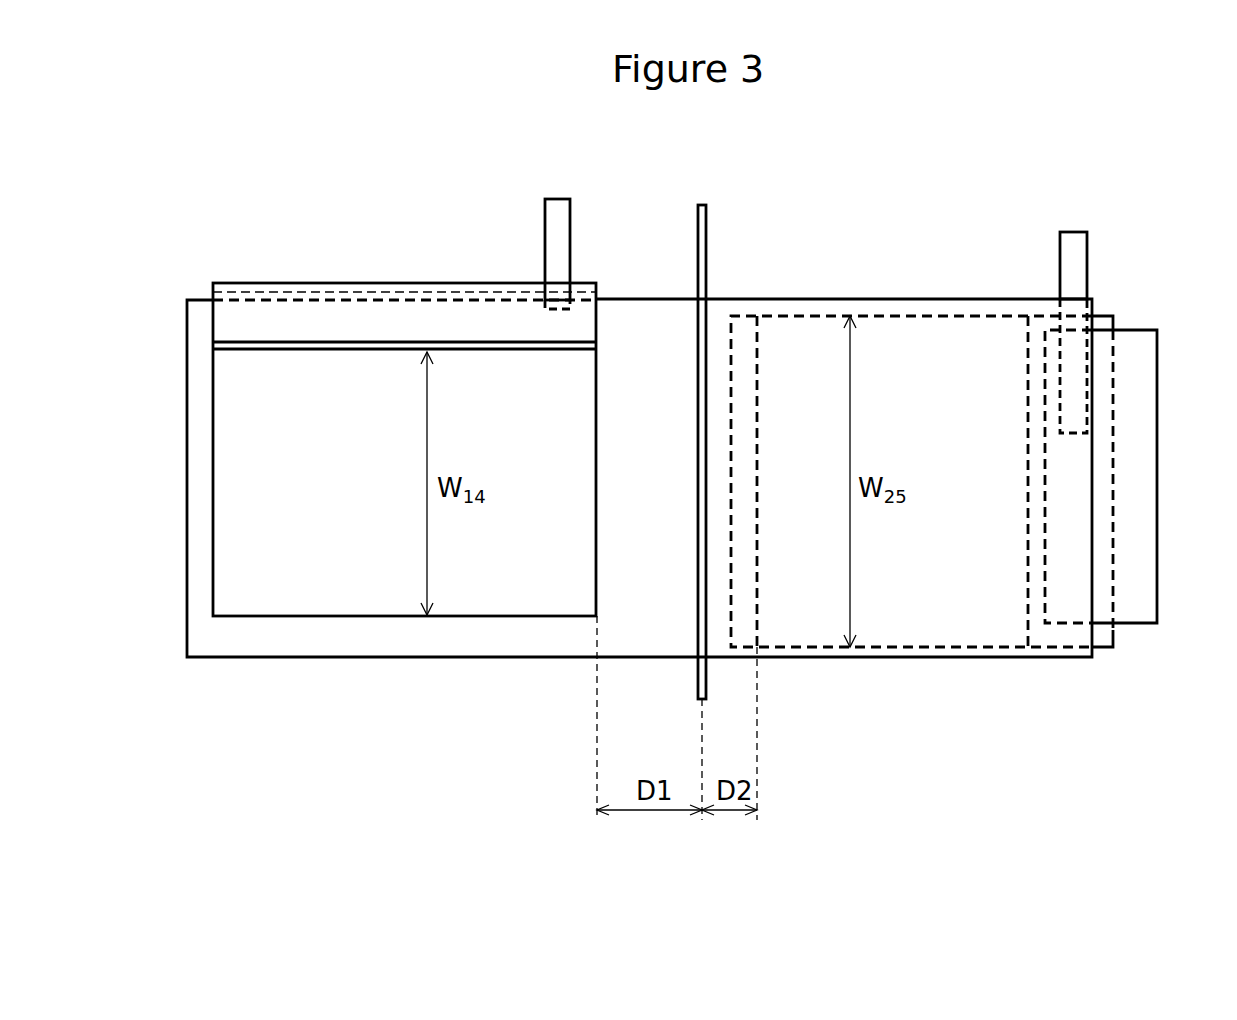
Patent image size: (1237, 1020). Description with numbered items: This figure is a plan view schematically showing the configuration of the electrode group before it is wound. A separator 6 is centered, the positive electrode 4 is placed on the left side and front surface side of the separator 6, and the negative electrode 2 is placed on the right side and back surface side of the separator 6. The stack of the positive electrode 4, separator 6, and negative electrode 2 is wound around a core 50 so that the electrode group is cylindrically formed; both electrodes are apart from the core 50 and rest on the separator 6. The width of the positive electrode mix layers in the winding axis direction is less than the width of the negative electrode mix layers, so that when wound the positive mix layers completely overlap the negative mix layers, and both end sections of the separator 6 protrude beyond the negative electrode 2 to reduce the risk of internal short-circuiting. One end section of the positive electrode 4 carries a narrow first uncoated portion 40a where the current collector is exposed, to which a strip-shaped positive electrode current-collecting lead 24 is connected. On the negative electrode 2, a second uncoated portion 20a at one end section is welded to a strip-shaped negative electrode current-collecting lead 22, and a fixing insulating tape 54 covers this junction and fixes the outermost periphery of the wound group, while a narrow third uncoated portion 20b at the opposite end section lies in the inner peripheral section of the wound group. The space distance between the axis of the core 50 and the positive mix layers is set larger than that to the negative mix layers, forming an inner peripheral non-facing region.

The negative electrode 2 is at (876, 632).
The positive electrode 4 is at (395, 598).
The separator 6 is at (931, 306).
The second uncoated portion 20a is at (1071, 635).
The third uncoated portion 20b is at (745, 326).
The negative electrode current-collecting lead 22 is at (1072, 265).
The positive electrode current-collecting lead 24 is at (555, 233).
The first uncoated portion 40a is at (268, 309).
The core 50 is at (704, 215).
The fixing insulating tape 54 is at (1148, 388).